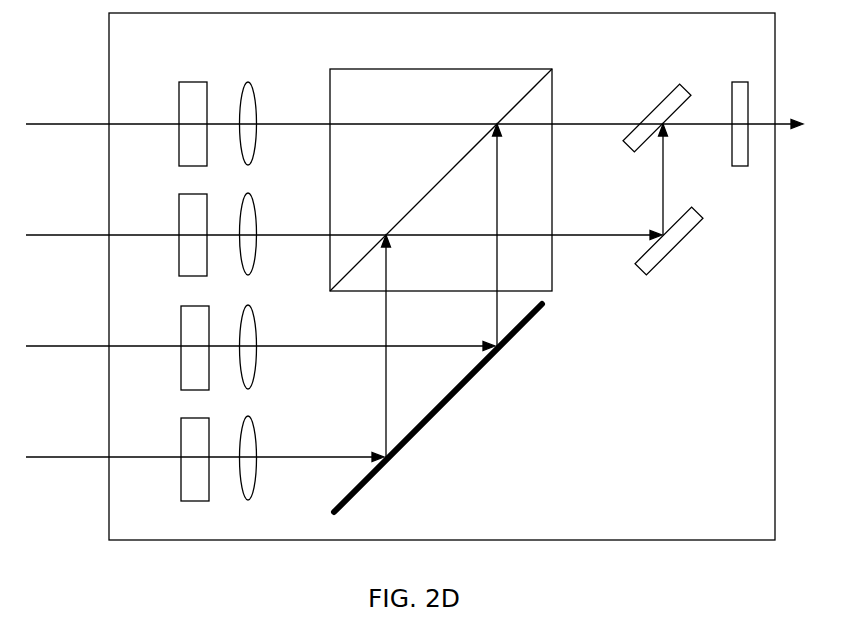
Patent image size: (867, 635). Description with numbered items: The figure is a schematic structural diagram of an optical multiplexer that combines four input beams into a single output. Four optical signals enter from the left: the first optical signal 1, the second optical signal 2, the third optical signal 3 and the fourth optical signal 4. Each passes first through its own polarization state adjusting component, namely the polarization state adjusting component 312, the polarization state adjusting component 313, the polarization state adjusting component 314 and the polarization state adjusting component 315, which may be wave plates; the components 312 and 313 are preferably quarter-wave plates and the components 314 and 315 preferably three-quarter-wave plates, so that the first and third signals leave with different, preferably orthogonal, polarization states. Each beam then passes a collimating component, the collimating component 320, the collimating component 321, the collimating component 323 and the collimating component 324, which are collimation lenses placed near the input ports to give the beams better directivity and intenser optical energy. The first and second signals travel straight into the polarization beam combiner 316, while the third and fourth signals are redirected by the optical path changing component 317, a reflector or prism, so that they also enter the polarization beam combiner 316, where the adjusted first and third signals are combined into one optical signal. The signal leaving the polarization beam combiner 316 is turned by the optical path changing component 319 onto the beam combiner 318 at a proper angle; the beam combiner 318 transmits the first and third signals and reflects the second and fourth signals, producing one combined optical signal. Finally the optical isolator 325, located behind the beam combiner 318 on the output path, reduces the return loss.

The first optical signal 1 is at (79, 99).
The second optical signal 2 is at (79, 210).
The third optical signal 3 is at (79, 321).
The fourth optical signal 4 is at (79, 432).
The polarization state adjusting component 312 is at (192, 82).
The polarization state adjusting component 313 is at (192, 194).
The polarization state adjusting component 314 is at (194, 306).
The polarization state adjusting component 315 is at (192, 418).
The polarization beam combiner 316 is at (441, 69).
The optical path changing component 317 is at (440, 410).
The beam combiner 318 is at (663, 100).
The optical path changing component 319 is at (674, 248).
The collimating component 320 is at (257, 100).
The collimating component 321 is at (257, 210).
The collimating component 323 is at (257, 321).
The collimating component 324 is at (257, 432).
The optical isolator 325 is at (743, 82).